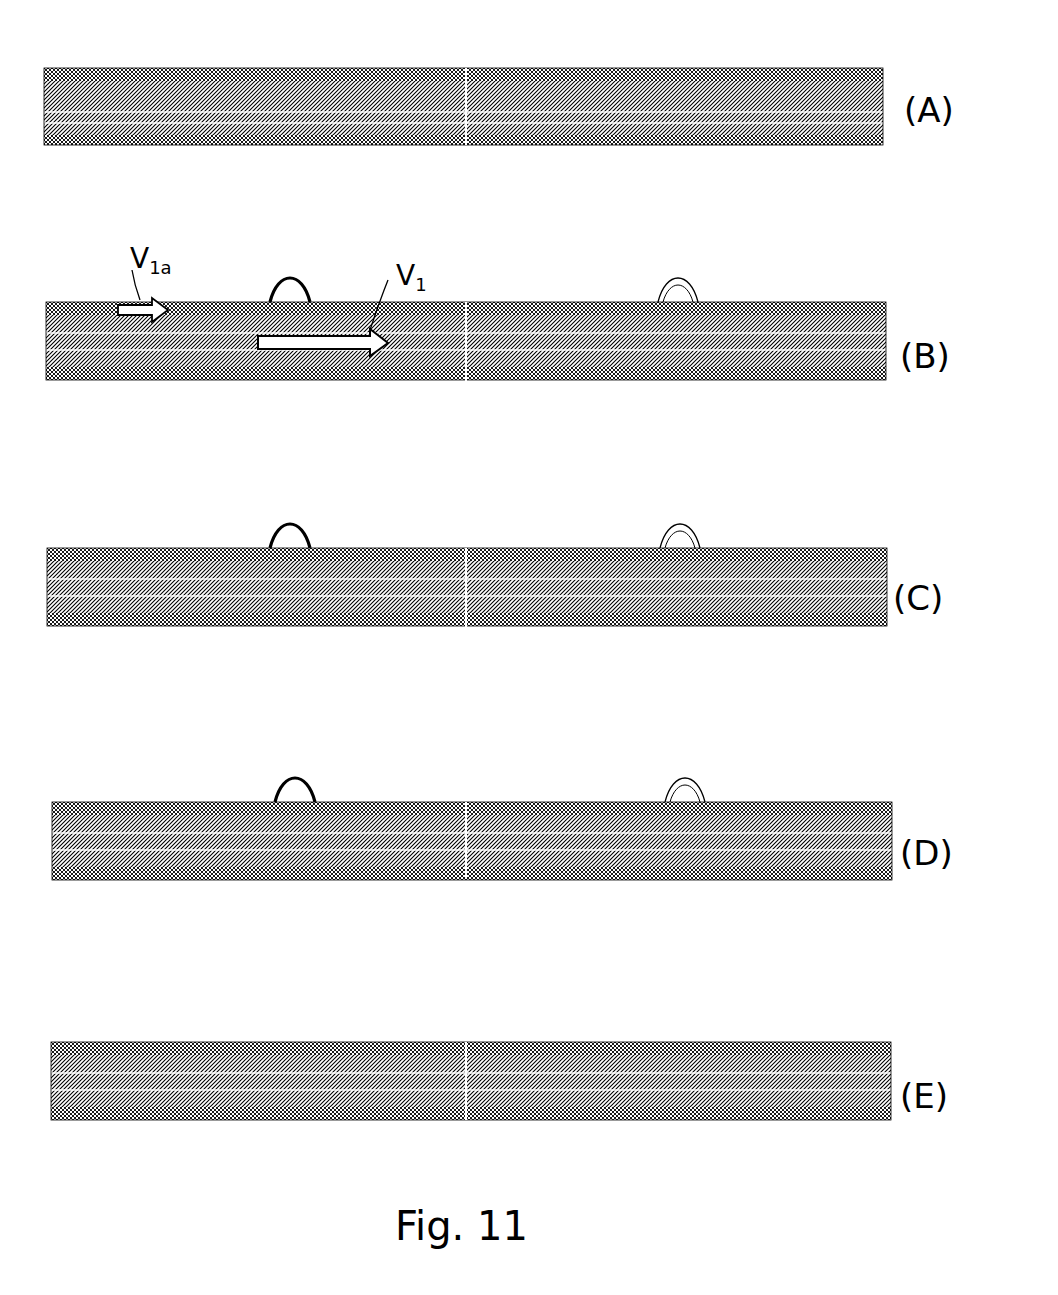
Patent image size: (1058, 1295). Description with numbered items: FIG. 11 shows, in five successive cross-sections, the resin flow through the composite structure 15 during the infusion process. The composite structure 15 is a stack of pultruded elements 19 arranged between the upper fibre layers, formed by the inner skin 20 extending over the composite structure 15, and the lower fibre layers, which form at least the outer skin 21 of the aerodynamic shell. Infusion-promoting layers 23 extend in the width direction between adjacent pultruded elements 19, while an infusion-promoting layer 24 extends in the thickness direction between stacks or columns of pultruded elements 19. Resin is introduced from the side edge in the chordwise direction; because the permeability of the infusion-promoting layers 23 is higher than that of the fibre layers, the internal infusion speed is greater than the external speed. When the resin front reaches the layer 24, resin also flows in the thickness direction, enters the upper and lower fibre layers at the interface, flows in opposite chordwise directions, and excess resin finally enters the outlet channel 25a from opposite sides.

The composite structure 15 is at (463, 104).
The pultruded element 19 is at (226, 100).
The inner skin 20 is at (620, 68).
The outer skin 21 is at (575, 142).
The infusion-promoting layer 23 is at (226, 100).
The infusion-promoting layer 24 is at (478, 65).
The outlet channel 25a is at (299, 280).